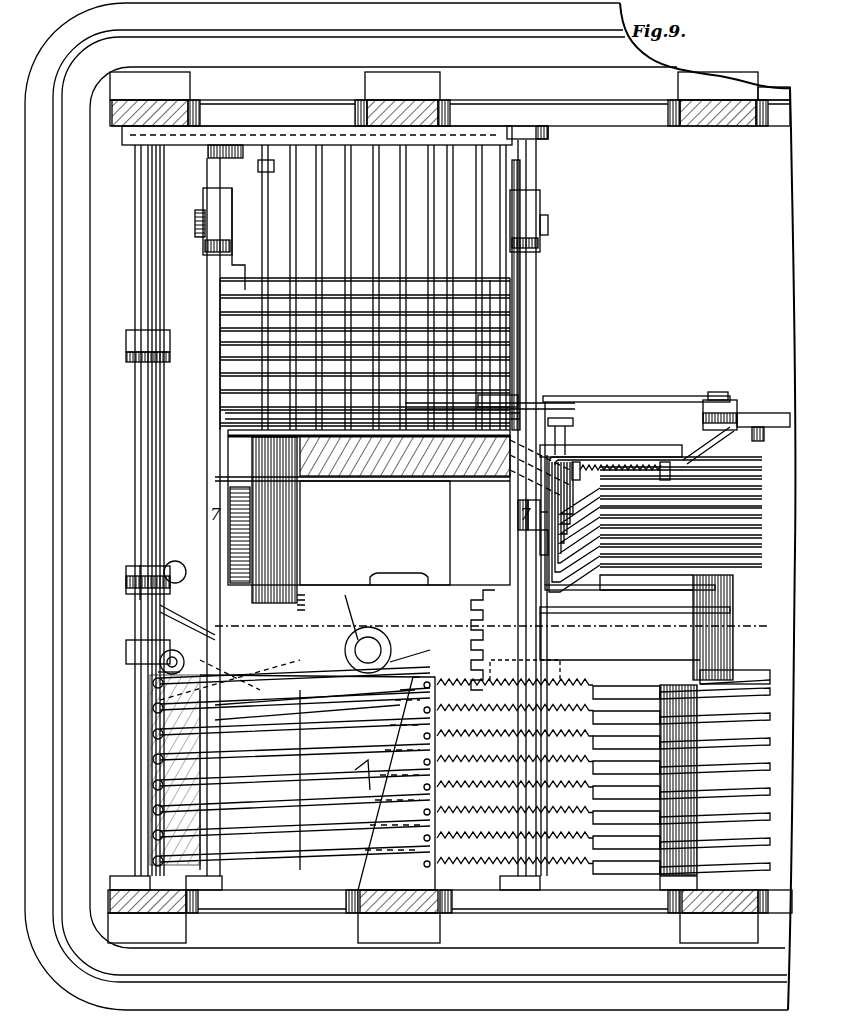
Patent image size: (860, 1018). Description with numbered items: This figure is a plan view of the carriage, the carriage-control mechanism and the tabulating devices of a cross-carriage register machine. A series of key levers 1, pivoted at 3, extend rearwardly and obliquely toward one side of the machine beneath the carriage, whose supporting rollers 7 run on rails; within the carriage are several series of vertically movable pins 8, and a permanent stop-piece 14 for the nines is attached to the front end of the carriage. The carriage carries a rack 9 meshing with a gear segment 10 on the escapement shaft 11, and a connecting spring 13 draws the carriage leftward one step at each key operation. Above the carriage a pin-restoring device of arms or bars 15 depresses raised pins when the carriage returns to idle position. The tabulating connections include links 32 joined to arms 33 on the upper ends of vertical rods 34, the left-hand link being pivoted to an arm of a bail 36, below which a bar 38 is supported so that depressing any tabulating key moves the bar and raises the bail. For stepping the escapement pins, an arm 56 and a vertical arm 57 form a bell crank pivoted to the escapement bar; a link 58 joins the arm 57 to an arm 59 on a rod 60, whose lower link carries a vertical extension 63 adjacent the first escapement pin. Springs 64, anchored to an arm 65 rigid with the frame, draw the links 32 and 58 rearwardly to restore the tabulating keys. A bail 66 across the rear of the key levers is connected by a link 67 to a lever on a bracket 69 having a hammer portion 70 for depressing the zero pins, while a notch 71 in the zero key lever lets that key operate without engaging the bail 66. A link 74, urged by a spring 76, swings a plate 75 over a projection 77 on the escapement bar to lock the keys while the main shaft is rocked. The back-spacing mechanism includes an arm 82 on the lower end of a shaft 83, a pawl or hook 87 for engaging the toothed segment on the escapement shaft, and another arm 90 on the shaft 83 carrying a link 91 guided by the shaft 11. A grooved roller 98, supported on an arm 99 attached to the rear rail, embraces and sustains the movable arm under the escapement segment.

The key levers 1 is at (762, 508).
The pivot 3 is at (740, 575).
The supporting rollers 7 is at (213, 221).
The pins 8 is at (262, 334).
The rack 9 is at (487, 640).
The gear segment 10 is at (362, 526).
The escapement shaft 11 is at (387, 634).
The connecting spring 13 is at (289, 529).
The stop-piece 14 is at (507, 295).
The arms or bars 15 is at (396, 226).
The links 32 is at (257, 780).
The arms 33 is at (160, 752).
The vertical rods 34 is at (160, 794).
The bail 36 is at (640, 676).
The bar 38 is at (695, 852).
The arm 56 is at (635, 625).
The arm 57 is at (752, 666).
The link 58 is at (403, 693).
The arm 59 is at (160, 684).
The rod 60 is at (160, 662).
The vertical extension 63 is at (405, 406).
The springs 64 is at (570, 866).
The arm 65 is at (396, 783).
The bail 66 is at (636, 484).
The link 67 is at (585, 420).
The bracket 69 is at (485, 396).
The hammer or driving portion 70 is at (372, 418).
The notch 71 is at (270, 262).
The link 74 is at (720, 445).
The swinging plate 75 is at (548, 575).
The spring 76 is at (625, 465).
The projection 77 is at (550, 550).
The arm 82 is at (746, 411).
The shaft 83 is at (173, 576).
The pawl or hook 87 is at (366, 790).
The arm 90 is at (180, 620).
The link 91 is at (236, 554).
The roller 98 is at (310, 690).
The arm 99 is at (307, 716).